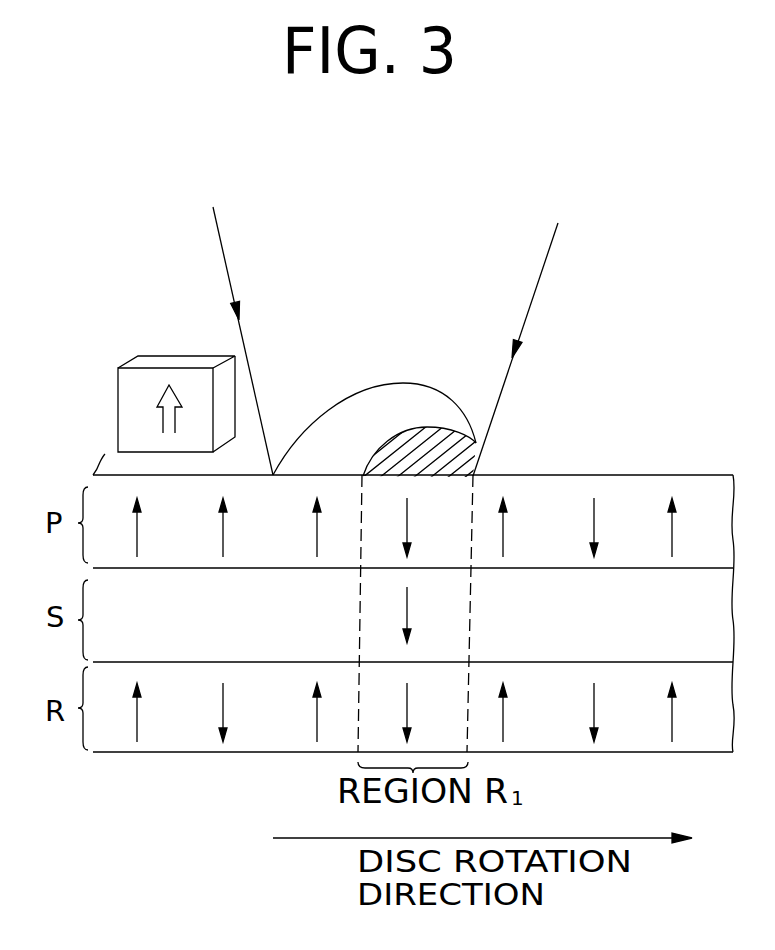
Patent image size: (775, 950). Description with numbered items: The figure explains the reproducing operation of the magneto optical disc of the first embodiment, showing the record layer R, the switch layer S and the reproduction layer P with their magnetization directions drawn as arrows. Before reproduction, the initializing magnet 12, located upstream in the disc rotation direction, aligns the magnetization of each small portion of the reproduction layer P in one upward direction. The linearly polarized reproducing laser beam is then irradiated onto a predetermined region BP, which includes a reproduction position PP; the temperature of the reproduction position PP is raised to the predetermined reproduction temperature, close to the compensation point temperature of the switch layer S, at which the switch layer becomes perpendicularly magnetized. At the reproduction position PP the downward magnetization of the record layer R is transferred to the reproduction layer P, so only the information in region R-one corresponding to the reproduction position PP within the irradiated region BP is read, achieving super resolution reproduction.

The initializing magnet 12 is at (150, 356).
The predetermined region BP is at (358, 392).
The reproduction position PP is at (476, 443).